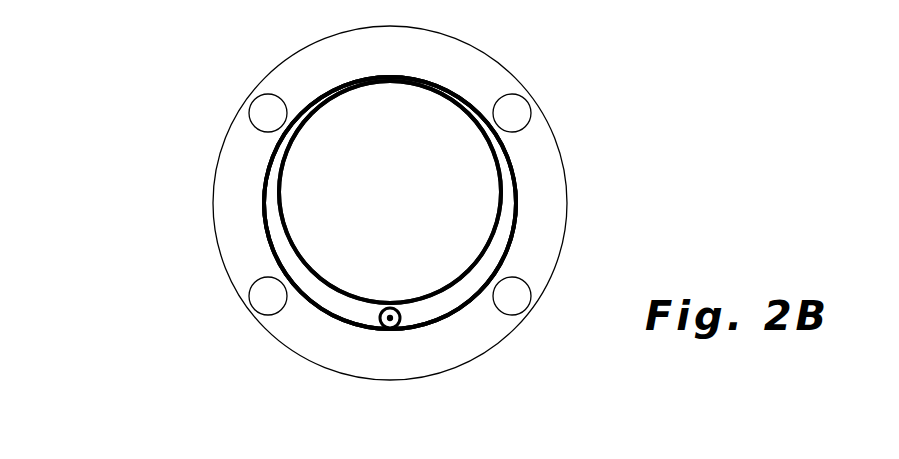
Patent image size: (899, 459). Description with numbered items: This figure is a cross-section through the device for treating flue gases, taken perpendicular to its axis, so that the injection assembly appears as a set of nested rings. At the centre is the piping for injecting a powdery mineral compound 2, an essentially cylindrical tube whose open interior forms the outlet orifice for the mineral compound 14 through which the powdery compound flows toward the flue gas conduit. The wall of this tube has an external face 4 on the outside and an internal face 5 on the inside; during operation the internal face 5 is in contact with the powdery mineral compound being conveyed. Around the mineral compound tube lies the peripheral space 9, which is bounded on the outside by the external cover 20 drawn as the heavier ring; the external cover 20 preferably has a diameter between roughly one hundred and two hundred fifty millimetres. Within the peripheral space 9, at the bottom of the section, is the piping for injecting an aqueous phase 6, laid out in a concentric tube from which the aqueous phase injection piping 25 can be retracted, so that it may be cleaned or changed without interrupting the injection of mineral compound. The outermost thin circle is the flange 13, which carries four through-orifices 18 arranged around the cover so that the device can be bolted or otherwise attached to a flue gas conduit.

The piping for injecting a powdery mineral compound 2 is at (431, 258).
The external face 4 is at (500, 240).
The internal face 5 is at (492, 195).
The piping for injecting an aqueous phase 6 is at (379, 321).
The peripheral space 9 is at (508, 205).
The flange 13 is at (537, 210).
The outlet orifice for the mineral compound 14 is at (403, 206).
The through-orifices 18 is at (263, 118).
The external cover 20 is at (265, 232).
The aqueous phase injection piping 25 is at (400, 321).